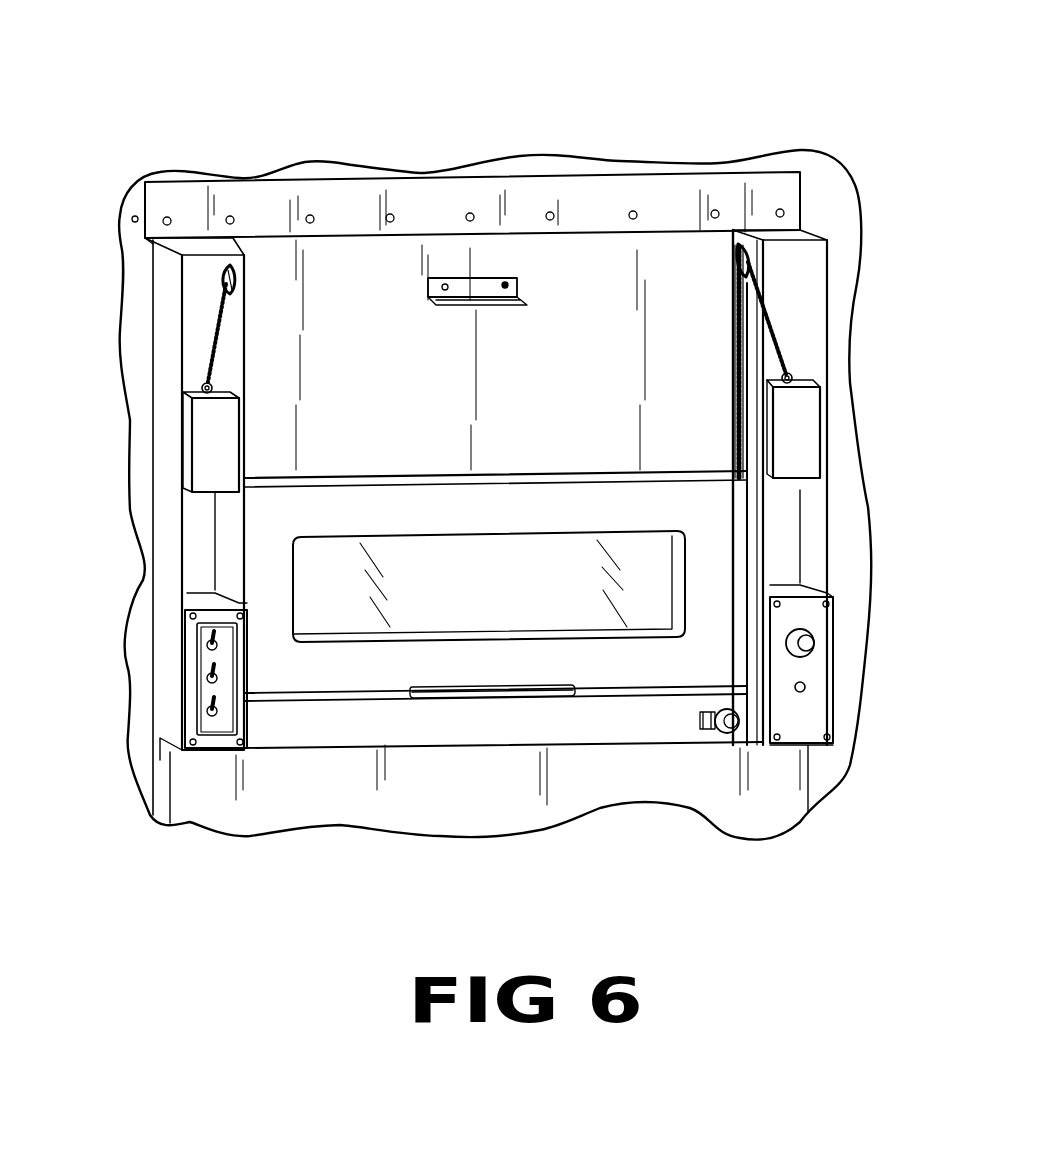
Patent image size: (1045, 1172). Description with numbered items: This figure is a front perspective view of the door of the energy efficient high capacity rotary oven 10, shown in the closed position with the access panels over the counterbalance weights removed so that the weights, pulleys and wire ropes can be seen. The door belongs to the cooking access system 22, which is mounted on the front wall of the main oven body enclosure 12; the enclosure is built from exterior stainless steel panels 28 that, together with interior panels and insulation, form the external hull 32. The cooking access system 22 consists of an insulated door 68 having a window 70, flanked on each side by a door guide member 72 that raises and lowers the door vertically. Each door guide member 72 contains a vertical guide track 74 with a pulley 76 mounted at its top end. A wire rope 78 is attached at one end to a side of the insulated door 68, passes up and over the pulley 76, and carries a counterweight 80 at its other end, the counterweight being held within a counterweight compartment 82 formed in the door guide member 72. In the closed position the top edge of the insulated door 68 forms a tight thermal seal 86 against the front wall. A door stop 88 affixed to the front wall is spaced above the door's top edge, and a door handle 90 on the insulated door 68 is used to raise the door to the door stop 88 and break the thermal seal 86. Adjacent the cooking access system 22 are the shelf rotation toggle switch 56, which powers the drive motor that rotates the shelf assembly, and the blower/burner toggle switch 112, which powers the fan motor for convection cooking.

The energy efficient high capacity rotary oven 10 is at (826, 110).
The main oven body enclosure 12 is at (115, 590).
The cooking access system 22 is at (528, 462).
The exterior stainless steel panels 28 is at (150, 801).
The external hull 32 is at (112, 748).
The shelf rotation toggle switch 56 is at (217, 699).
The insulated door 68 is at (389, 498).
The window 70 is at (525, 552).
The door guide members 72 is at (258, 355).
The vertical guide track 74 is at (736, 343).
The pulley 76 is at (228, 270).
The wire rope 78 is at (220, 329).
The counterweight 80 is at (230, 422).
The counterweight compartment 82 is at (245, 528).
The thermal seal 86 is at (428, 474).
The door stop 88 is at (528, 302).
The door handle 90 is at (517, 694).
The blower/burner toggle switch 112 is at (220, 666).